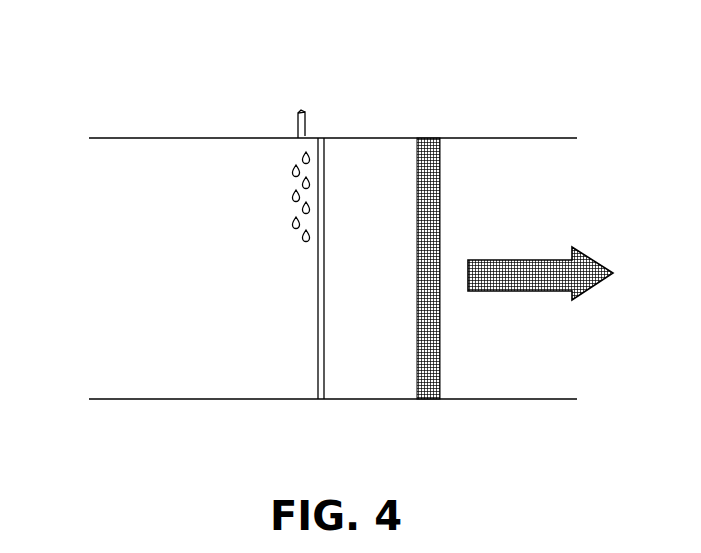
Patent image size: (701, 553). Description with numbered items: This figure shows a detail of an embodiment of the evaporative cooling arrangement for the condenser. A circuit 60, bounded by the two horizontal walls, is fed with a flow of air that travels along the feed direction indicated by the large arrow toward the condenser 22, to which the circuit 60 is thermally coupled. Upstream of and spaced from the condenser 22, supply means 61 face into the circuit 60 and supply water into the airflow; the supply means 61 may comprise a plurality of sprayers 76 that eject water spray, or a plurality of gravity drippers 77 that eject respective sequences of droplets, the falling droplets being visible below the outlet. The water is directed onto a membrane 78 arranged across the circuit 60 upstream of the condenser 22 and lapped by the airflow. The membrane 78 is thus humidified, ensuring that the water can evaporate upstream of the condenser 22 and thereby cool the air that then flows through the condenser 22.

The condenser 22 is at (433, 184).
The circuit 60 is at (179, 143).
The supply means 61 is at (301, 110).
The sprayers 76 is at (306, 118).
The gravity drippers 77 is at (317, 94).
The membrane 78 is at (326, 206).